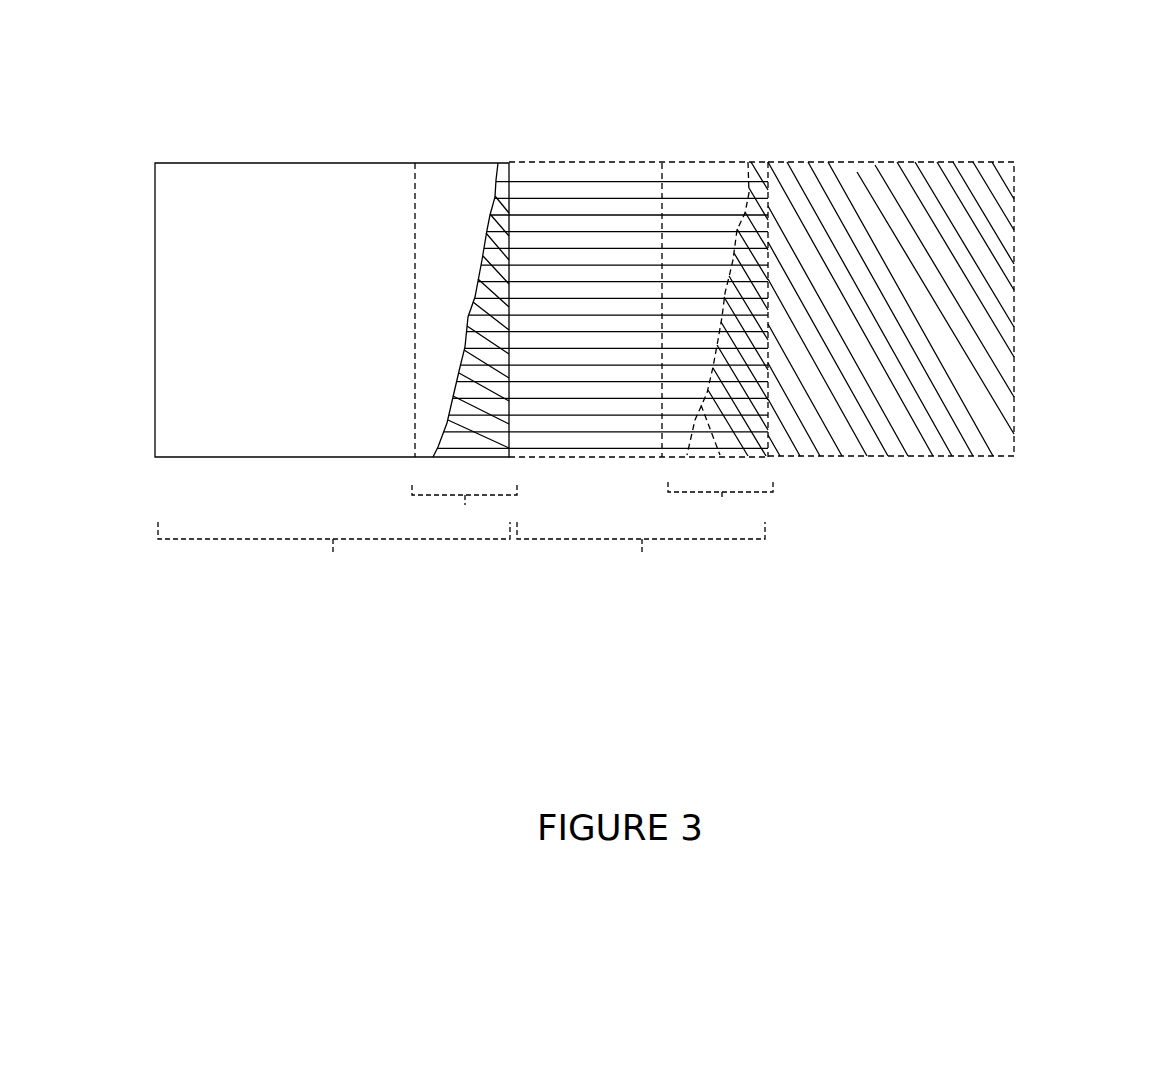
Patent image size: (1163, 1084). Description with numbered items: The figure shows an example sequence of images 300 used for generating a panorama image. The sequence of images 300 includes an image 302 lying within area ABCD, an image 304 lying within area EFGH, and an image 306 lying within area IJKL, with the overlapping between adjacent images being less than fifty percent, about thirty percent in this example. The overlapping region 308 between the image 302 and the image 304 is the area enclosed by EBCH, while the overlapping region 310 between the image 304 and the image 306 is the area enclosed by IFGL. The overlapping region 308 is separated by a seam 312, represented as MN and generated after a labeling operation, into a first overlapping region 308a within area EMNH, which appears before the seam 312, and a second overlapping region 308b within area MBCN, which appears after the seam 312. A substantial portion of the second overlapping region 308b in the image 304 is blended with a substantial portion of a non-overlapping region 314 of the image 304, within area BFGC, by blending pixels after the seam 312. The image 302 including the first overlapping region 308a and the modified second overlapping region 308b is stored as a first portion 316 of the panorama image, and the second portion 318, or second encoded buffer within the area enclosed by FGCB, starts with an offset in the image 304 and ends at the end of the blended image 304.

The sequence of images 300 is at (984, 646).
The image 302 is at (250, 128).
The image 304 is at (541, 137).
The image 306 is at (862, 124).
The overlapping region 308 is at (478, 288).
The first overlapping region 308a is at (441, 174).
The second overlapping region 308b is at (490, 439).
The overlapping region 310 is at (720, 328).
The seam 312 is at (491, 172).
The non-overlapping region 314 is at (583, 174).
The first portion 316 is at (334, 565).
The second portion 318 is at (641, 557).